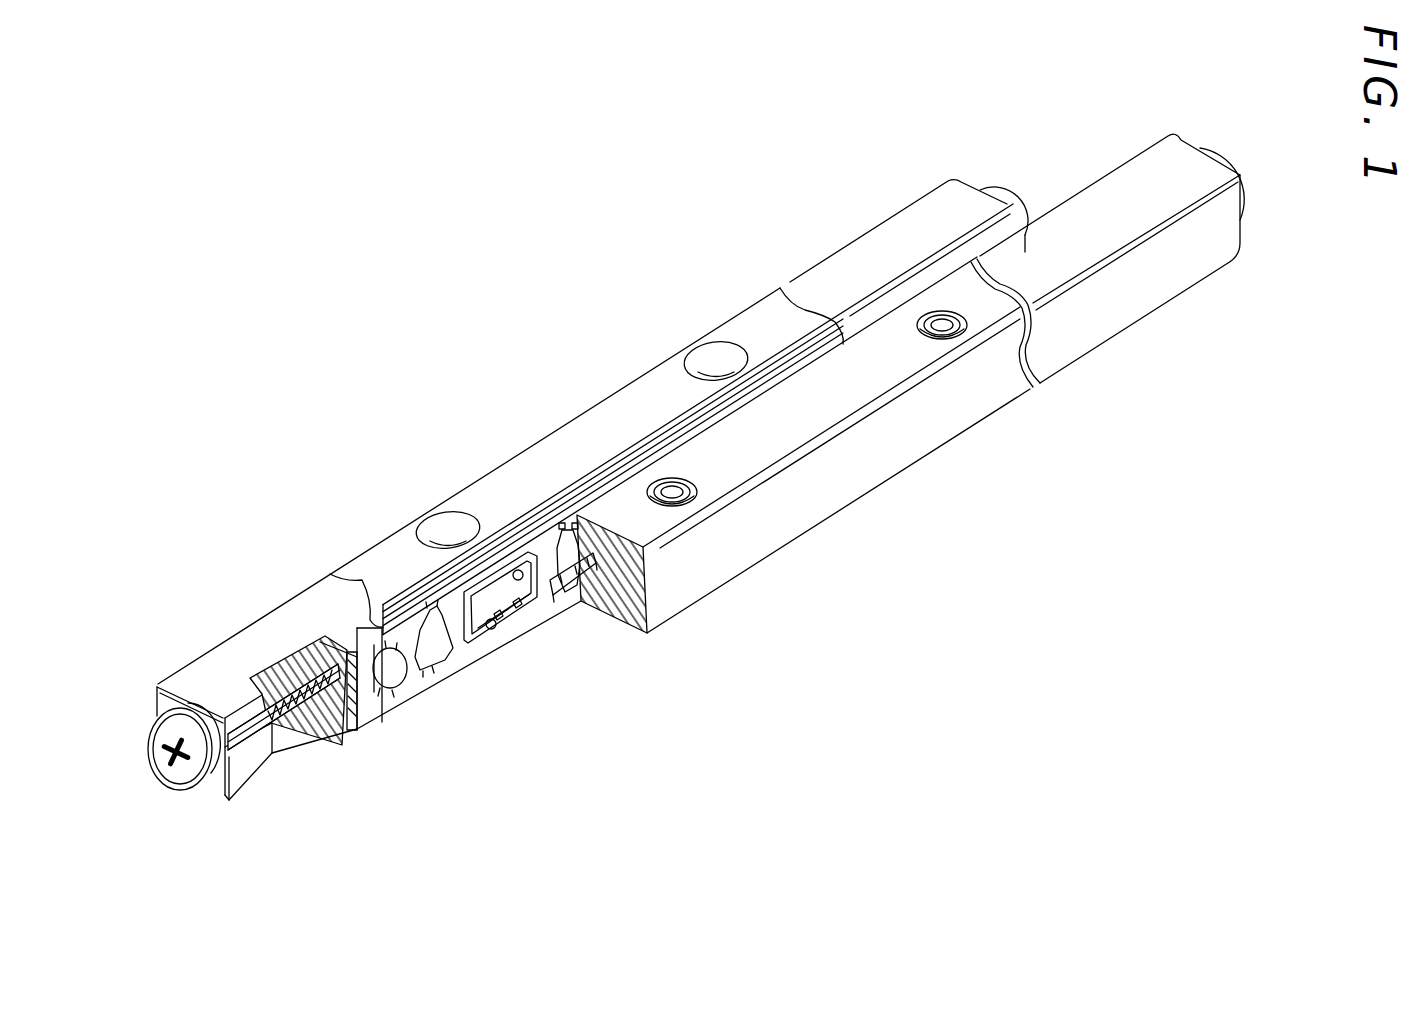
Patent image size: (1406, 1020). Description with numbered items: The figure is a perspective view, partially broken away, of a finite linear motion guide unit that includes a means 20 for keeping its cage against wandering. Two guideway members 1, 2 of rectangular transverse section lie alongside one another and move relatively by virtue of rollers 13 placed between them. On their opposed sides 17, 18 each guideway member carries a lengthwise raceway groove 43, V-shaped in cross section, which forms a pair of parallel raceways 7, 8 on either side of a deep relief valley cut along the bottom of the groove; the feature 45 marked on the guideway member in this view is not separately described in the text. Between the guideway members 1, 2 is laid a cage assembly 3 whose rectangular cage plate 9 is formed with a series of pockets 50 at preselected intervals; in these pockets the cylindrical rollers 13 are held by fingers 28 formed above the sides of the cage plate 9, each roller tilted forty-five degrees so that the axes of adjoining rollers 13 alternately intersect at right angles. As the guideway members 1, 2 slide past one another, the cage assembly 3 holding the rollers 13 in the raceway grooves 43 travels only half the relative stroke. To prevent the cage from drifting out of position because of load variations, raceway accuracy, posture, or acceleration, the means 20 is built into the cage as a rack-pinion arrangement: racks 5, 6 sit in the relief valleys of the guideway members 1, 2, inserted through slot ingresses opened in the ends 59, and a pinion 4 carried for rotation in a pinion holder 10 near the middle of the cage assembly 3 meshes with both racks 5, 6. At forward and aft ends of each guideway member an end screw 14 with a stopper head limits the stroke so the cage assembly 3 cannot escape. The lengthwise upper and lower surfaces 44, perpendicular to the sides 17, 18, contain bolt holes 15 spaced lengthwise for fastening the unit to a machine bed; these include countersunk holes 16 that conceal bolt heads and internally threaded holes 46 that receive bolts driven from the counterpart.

The guideway member 1 is at (621, 374).
The guideway member 2 is at (860, 380).
The cage assembly 3 is at (405, 634).
The pinion 4 is at (514, 632).
The rack 5 is at (287, 705).
The rack 6 is at (565, 596).
The raceway 7 is at (338, 690).
The raceway 8 is at (553, 552).
The cage plate 9 is at (461, 657).
The pinion holder 10 is at (495, 585).
The roller 13 is at (437, 668).
The end screw 14 is at (160, 737).
The bolt hole 15 is at (445, 520).
The countersunk hole 16 is at (714, 355).
The side 17 is at (245, 782).
The side 18 is at (567, 530).
The means to keep the cage assembly against wandering 20 is at (500, 640).
The finger 28 is at (384, 636).
The raceway groove 43 is at (325, 633).
The upper and lower surface 44 is at (877, 257).
The grooves 45 is at (682, 430).
The internally threaded hole 46 is at (690, 503).
The pocket 50 is at (392, 672).
The end 59 is at (158, 702).